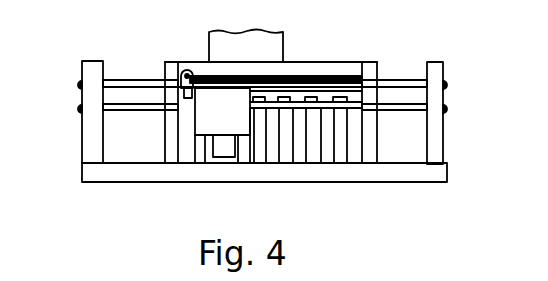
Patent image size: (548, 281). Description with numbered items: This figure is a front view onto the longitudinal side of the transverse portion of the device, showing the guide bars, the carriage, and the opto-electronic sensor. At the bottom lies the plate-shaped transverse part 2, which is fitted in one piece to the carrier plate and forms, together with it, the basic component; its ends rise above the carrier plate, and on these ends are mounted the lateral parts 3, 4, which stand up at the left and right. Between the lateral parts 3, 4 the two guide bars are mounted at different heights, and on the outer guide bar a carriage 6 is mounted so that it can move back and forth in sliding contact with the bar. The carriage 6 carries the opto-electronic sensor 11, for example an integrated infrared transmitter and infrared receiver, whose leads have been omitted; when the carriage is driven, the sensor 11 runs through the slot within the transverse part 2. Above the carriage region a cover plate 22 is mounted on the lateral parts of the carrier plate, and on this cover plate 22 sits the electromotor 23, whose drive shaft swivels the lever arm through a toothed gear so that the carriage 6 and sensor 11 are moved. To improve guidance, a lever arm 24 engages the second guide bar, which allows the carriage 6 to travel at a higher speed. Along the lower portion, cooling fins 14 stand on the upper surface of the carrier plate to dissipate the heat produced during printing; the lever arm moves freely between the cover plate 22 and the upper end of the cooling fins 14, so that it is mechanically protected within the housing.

The plate-shaped transverse part 2 is at (397, 175).
The lateral part 3 is at (82, 73).
The lateral part 4 is at (438, 73).
The carriage 6 is at (228, 120).
The opto-electronic sensor 11 is at (222, 157).
The cooling fins 14 is at (342, 153).
The cover plate 22 is at (340, 62).
The electromotor 23 is at (252, 56).
The lever arm 24 is at (187, 69).